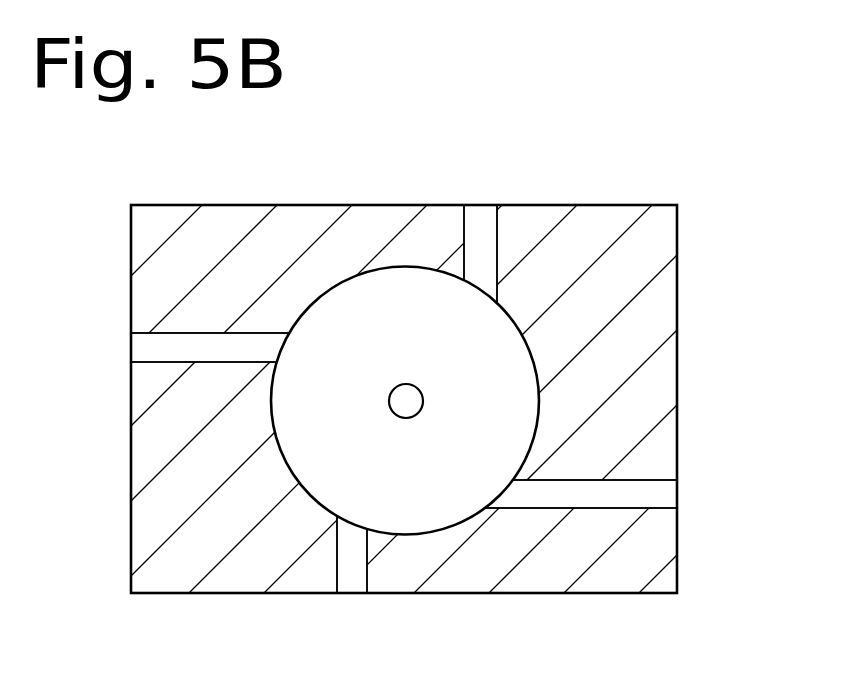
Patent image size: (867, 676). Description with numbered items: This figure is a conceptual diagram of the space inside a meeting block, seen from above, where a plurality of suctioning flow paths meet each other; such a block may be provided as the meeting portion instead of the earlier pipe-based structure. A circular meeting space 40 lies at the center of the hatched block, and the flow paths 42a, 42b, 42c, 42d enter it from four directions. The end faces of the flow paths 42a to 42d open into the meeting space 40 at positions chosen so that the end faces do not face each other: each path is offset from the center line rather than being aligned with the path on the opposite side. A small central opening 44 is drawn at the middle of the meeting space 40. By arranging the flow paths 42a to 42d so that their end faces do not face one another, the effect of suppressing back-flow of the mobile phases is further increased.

The meeting space 40 is at (518, 383).
The flow path 42a is at (630, 498).
The flow path 42b is at (352, 560).
The flow path 42c is at (209, 347).
The flow path 42d is at (487, 231).
The through hole 44 is at (397, 395).